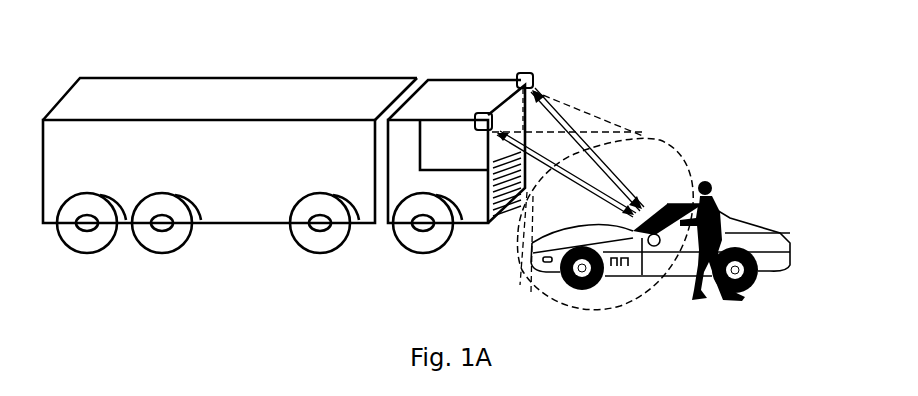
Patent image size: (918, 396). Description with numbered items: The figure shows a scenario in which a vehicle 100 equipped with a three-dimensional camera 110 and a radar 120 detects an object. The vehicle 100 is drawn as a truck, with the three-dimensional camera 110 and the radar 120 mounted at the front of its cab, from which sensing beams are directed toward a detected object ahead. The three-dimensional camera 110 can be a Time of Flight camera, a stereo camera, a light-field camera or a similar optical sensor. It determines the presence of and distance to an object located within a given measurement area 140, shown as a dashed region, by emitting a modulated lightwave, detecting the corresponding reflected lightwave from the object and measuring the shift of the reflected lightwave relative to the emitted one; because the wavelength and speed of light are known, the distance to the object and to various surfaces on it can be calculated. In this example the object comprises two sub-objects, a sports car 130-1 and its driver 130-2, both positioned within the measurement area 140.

The vehicle 100 is at (262, 174).
The 3D camera 110 is at (485, 113).
The radar 120 is at (531, 74).
The sports car 130-1 is at (780, 243).
The driver 130-2 is at (713, 189).
The measurement area 140 is at (657, 142).